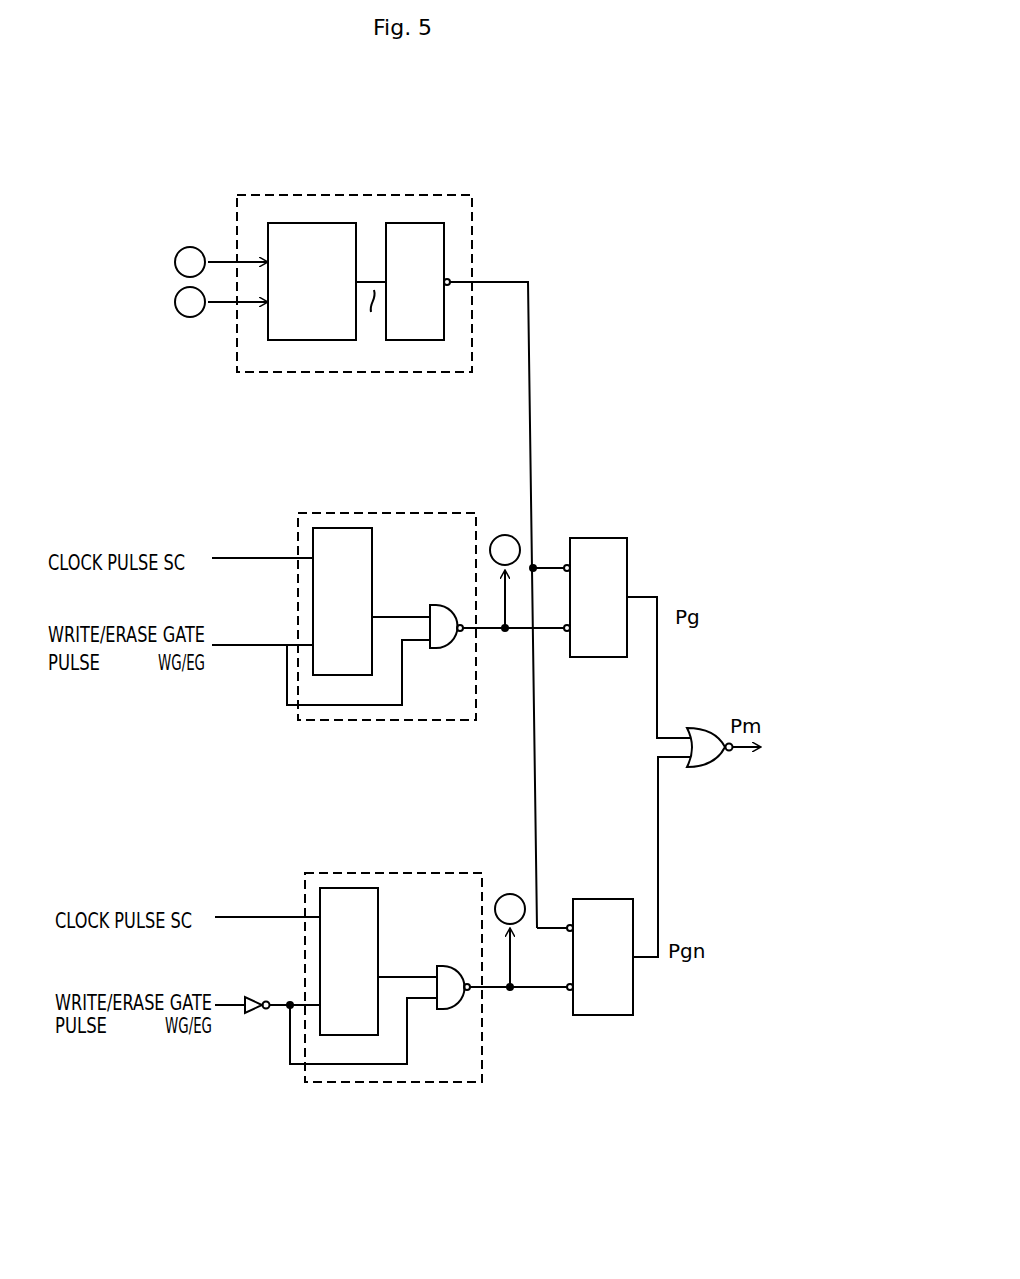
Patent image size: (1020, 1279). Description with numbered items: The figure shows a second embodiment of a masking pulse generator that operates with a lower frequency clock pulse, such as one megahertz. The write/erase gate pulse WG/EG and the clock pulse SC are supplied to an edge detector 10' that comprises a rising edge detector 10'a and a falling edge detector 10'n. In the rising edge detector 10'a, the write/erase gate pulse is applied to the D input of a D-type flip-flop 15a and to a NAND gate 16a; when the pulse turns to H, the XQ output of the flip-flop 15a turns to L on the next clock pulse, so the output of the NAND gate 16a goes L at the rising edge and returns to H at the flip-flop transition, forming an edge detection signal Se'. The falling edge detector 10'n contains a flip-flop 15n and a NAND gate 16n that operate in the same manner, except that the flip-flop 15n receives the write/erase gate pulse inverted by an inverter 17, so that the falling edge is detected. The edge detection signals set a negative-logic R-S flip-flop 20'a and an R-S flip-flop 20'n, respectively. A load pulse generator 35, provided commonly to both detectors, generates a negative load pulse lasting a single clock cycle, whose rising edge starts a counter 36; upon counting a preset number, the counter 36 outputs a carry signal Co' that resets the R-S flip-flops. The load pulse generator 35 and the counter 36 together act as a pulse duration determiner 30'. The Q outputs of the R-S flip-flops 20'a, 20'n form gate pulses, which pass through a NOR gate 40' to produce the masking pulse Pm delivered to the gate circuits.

The pulse duration determiner 30' is at (490, 537).
The load pulse generator 35 is at (285, 223).
The counter 36 is at (444, 243).
The edge detector 10' is at (389, 825).
The rising edge detector 10'a is at (388, 581).
The flip-flop 15a is at (372, 541).
The NAND gate 16a is at (441, 651).
The falling edge detector 10'n is at (391, 941).
The flip-flop 15n is at (378, 902).
The NAND gate 16n is at (448, 1011).
The inverter 17 is at (247, 1016).
The R-S flip-flop 20'a is at (608, 564).
The R-S flip-flop 20'n is at (596, 997).
The NOR gate 40' is at (704, 711).